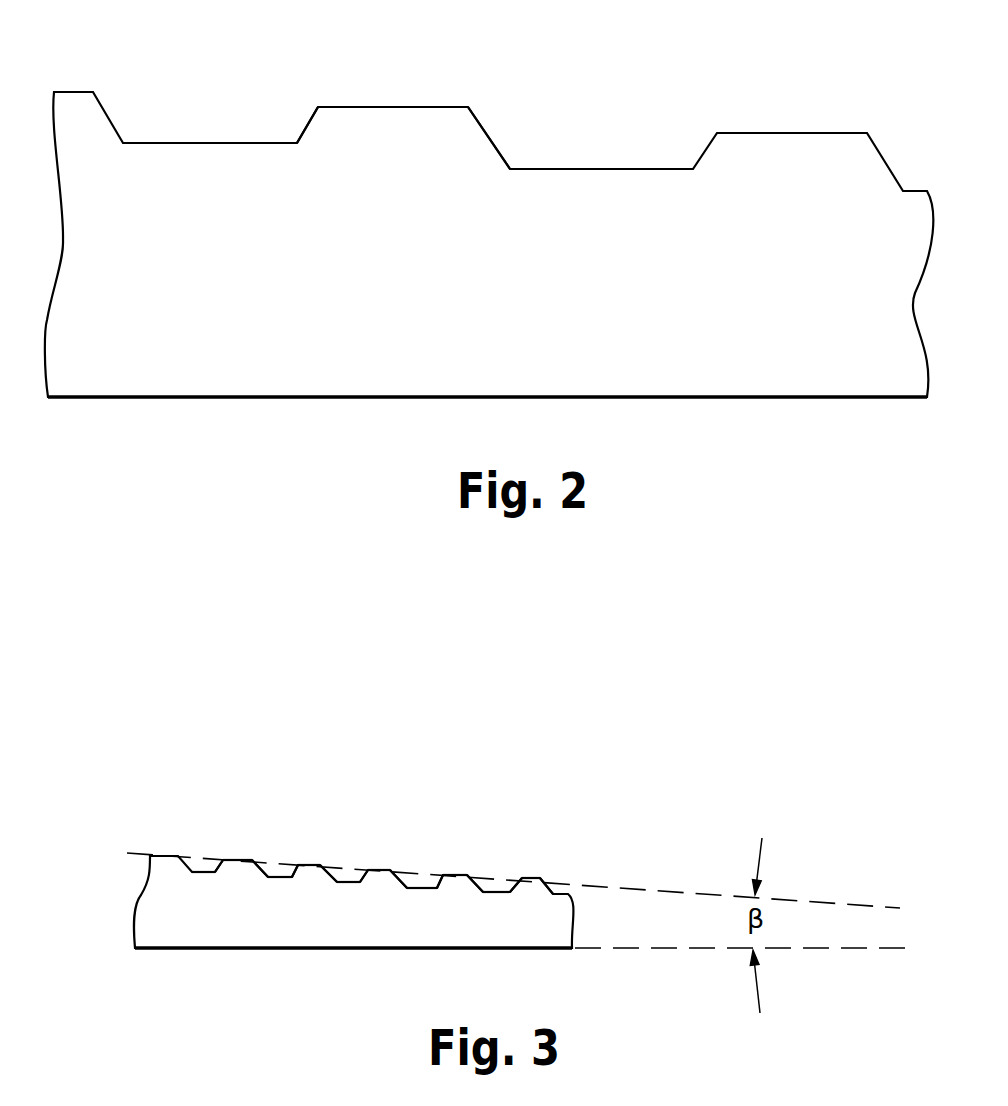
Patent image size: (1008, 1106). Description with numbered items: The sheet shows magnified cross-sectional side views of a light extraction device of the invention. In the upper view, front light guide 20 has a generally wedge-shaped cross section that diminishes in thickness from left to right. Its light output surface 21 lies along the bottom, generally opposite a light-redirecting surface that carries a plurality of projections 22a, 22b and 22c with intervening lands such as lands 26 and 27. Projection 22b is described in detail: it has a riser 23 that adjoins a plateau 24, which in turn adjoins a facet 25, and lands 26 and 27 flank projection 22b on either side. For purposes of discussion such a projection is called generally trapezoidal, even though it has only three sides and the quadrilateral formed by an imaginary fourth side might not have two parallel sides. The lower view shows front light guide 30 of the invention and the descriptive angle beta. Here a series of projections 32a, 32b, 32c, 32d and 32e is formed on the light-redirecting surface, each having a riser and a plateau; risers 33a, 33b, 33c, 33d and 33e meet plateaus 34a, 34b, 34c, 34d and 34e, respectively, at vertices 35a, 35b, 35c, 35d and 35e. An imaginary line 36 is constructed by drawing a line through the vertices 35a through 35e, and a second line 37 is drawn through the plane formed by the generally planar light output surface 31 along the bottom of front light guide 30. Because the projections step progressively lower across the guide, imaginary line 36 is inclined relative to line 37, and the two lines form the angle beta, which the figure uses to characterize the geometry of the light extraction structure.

In FIG. 2, the front light guide 20 is at (636, 103).
In FIG. 2, the light output surface 21 is at (585, 397).
In FIG. 2, the projection 22a is at (77, 85).
In FIG. 2, the projection 22b is at (375, 101).
In FIG. 2, the projection 22c is at (798, 127).
In FIG. 2, the riser 23 is at (307, 122).
In FIG. 2, the plateau 24 is at (433, 107).
In FIG. 2, the facet 25 is at (485, 128).
In FIG. 2, the land 26 is at (222, 143).
In FIG. 2, the land 27 is at (567, 169).
In FIG. 3, the front light guide 30 is at (536, 796).
In FIG. 3, the light output surface 31 is at (347, 950).
In FIG. 3, the projection 32a is at (234, 855).
In FIG. 3, the projection 32b is at (309, 856).
In FIG. 3, the projection 32c is at (381, 862).
In FIG. 3, the projection 32d is at (450, 867).
In FIG. 3, the projection 32e is at (533, 873).
In FIG. 3, the riser 33a is at (221, 874).
In FIG. 3, the riser 33b is at (299, 878).
In FIG. 3, the riser 33c is at (366, 883).
In FIG. 3, the riser 33d is at (440, 888).
In FIG. 3, the riser 33e is at (508, 893).
In FIG. 3, the plateau 34a is at (242, 862).
In FIG. 3, the plateau 34b is at (324, 870).
In FIG. 3, the plateau 34c is at (395, 874).
In FIG. 3, the plateau 34d is at (470, 878).
In FIG. 3, the plateau 34e is at (537, 879).
In FIG. 3, the vertex 35a is at (227, 861).
In FIG. 3, the vertex 35b is at (298, 866).
In FIG. 3, the vertex 35c is at (372, 870).
In FIG. 3, the vertex 35d is at (440, 875).
In FIG. 3, the vertex 35e is at (523, 879).
In FIG. 3, the imaginary line 36 is at (727, 894).
In FIG. 3, the line 37 is at (685, 952).